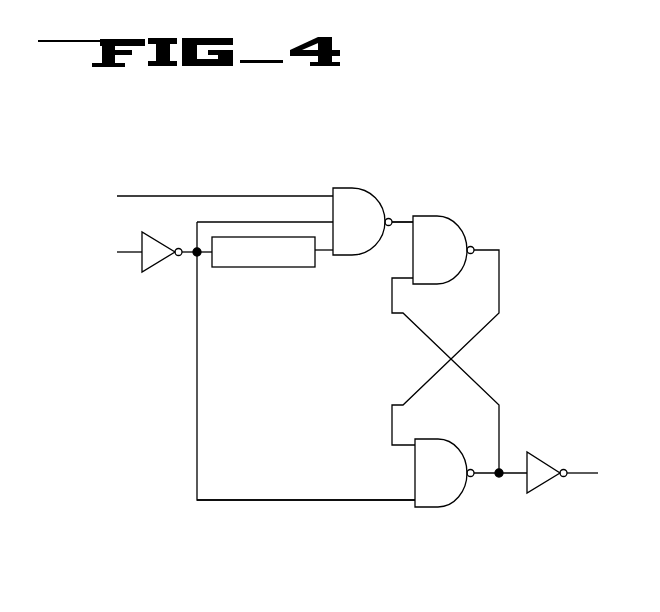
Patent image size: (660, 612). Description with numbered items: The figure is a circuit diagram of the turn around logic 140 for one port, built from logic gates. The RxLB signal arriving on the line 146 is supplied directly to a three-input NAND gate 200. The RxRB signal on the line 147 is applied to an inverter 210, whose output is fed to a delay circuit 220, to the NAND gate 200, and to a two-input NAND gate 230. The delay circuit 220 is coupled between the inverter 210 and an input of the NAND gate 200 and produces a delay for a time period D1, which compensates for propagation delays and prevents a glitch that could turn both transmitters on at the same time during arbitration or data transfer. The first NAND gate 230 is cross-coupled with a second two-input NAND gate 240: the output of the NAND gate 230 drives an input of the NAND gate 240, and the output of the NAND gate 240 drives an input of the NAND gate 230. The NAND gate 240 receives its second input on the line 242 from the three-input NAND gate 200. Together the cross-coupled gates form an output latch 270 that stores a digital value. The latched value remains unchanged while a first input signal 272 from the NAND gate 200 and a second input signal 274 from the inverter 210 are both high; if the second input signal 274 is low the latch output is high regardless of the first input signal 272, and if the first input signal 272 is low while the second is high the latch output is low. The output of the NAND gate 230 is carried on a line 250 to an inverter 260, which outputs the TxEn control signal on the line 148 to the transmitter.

The turn around logic 140 is at (412, 132).
The line carrying the RxLB signal 146 is at (173, 196).
The line carrying the RxRB signal 147 is at (133, 253).
The line carrying the TxEn signal 148 is at (580, 473).
The three-input NAND gate 200 is at (347, 188).
The inverter 210 is at (158, 263).
The delay circuit 220 is at (255, 268).
The first two-input NAND gate 230 is at (447, 507).
The second two-input NAND gate 240 is at (437, 214).
The line from the three-input NAND gate 242 is at (404, 222).
The line carrying the first NAND gate output 250 is at (513, 470).
The inverter 260 is at (545, 485).
The output latch 270 is at (545, 258).
The first input signal 272 is at (405, 226).
The second input signal 274 is at (390, 500).